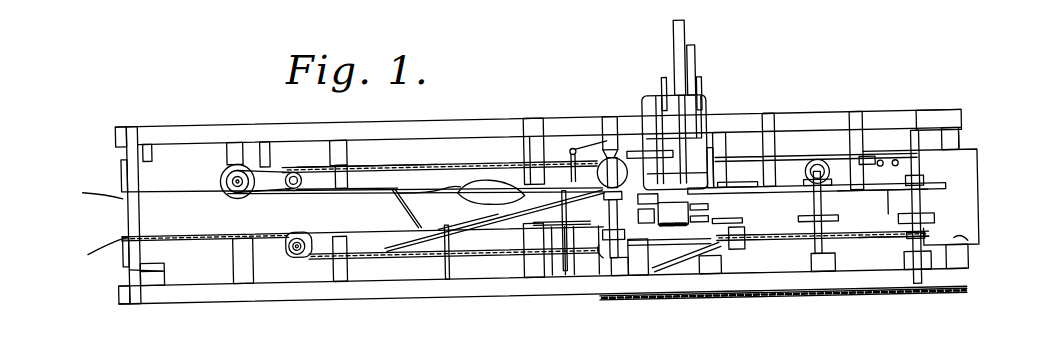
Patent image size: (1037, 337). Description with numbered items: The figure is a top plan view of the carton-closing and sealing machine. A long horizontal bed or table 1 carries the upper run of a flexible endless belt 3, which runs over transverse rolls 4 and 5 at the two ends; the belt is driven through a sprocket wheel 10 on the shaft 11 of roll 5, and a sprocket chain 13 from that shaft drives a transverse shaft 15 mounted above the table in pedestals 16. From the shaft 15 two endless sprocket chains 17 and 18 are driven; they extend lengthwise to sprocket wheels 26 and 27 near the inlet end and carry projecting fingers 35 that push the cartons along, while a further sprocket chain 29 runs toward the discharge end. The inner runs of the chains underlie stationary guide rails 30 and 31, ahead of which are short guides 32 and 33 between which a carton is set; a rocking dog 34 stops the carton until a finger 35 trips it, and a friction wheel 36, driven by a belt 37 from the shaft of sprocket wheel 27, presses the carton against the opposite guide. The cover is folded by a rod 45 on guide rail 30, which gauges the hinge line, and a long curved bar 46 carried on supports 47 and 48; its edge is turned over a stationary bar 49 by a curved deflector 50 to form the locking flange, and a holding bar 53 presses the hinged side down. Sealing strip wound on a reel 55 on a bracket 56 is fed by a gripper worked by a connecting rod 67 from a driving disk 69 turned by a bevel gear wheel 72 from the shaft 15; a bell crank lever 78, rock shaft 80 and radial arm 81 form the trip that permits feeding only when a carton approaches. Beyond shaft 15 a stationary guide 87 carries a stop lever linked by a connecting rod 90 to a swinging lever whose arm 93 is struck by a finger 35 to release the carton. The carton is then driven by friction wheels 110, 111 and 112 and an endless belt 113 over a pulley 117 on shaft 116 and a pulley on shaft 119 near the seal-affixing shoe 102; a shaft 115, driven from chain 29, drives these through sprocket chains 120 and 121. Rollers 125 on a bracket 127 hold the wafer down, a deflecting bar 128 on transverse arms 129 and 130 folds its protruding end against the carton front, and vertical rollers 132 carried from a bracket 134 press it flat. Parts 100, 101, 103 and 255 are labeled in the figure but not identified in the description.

The bed or table 1 is at (935, 160).
The endless belt 3 is at (170, 262).
The transverse roll 4 is at (163, 278).
The transverse roll 5 is at (975, 258).
The sprocket wheel 10 is at (970, 276).
The shaft 11 is at (964, 152).
The sprocket chain 13 is at (795, 314).
The transverse shaft 15 is at (606, 219).
The pedestals 16 is at (606, 140).
The endless sprocket chain 17 is at (425, 170).
The endless sprocket chain 18 is at (400, 262).
The sprocket wheel 26 is at (306, 249).
The sprocket wheel 27 is at (298, 193).
The sprocket chain 29 is at (808, 180).
The guide rail 30 is at (346, 202).
The guide rail 31 is at (490, 221).
The guide 32 is at (160, 200).
The guide 33 is at (182, 237).
The rocking dog 34 is at (245, 241).
The fingers 35 is at (372, 170).
The friction wheel 36 is at (222, 182).
The belt 37 is at (287, 198).
The rod 45 is at (412, 216).
The bar 46 is at (468, 231).
The support 47 is at (446, 285).
The support 48 is at (566, 281).
The bar 49 is at (440, 195).
The curved wing or deflector 50 is at (491, 192).
The holding bar 53 is at (549, 240).
The reel 55 is at (678, 37).
The bracket 56 is at (702, 85).
The connecting rod 67 is at (675, 142).
The driving disk 69 is at (673, 215).
The bevel gear wheel 72 is at (611, 230).
The bell crank lever 78 is at (572, 157).
The rock shaft 80 is at (612, 165).
The radial arm 81 is at (660, 140).
The guide 87 is at (669, 243).
The connecting rod 90 is at (660, 270).
The arm 93 is at (596, 262).
The shelf 100 is at (641, 191).
The block 101 is at (647, 217).
The seal-affixing shoe 102 is at (699, 207).
The plate 103 is at (699, 221).
The friction wheel 110 is at (744, 240).
The friction wheel 111 is at (839, 213).
The friction wheel 112 is at (928, 238).
The endless belt 113 is at (893, 205).
The shaft 115 is at (830, 218).
The transverse shaft 116 is at (924, 222).
The pulley 117 is at (928, 206).
The transverse shaft 119 is at (733, 210).
The sprocket chain 120 is at (786, 255).
The sprocket chain 121 is at (870, 256).
The rollers 125 is at (802, 208).
The bracket 127 is at (768, 160).
The deflecting bar 128 is at (738, 190).
The transverse arm 129 is at (735, 152).
The transverse arm 130 is at (783, 152).
The vertical rollers 132 is at (893, 183).
The bracket 134 is at (862, 140).
The collar 255 is at (602, 238).